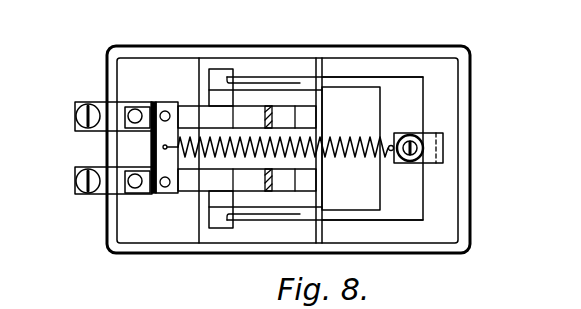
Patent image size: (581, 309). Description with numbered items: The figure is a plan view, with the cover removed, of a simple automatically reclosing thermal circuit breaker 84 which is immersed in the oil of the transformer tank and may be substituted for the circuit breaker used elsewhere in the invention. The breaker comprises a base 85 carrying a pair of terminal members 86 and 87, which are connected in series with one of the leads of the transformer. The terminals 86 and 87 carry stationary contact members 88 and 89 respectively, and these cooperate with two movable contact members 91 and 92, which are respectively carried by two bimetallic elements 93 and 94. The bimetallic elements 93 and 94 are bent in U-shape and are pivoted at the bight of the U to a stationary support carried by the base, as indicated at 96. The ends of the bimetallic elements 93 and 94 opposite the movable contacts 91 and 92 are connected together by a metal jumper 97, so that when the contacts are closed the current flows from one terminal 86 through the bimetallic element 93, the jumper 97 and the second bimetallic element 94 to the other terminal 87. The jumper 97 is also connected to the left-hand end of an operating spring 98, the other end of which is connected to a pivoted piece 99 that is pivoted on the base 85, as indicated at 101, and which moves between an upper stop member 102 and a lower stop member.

The automatically reclosing thermal circuit breaker 84 is at (381, 36).
The base 85 is at (153, 237).
The terminal member 86 is at (78, 181).
The terminal member 87 is at (78, 121).
The stationary contact member 88 is at (134, 194).
The stationary contact member 89 is at (138, 107).
The movable contact member 91 is at (143, 194).
The movable contact member 92 is at (143, 106).
The bimetallic element 93 is at (199, 245).
The bimetallic element 94 is at (199, 100).
The pivot of bimetallic elements 96 is at (284, 183).
The metal jumper 97 is at (150, 147).
The operating spring 98 is at (332, 138).
The pivoted piece 99 is at (392, 110).
The pivot of pivoted piece 101 is at (228, 71).
The upper stop member 102 is at (424, 143).